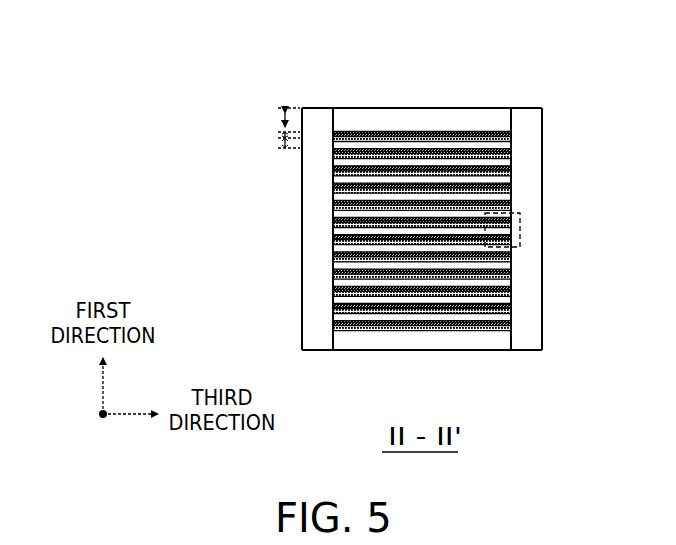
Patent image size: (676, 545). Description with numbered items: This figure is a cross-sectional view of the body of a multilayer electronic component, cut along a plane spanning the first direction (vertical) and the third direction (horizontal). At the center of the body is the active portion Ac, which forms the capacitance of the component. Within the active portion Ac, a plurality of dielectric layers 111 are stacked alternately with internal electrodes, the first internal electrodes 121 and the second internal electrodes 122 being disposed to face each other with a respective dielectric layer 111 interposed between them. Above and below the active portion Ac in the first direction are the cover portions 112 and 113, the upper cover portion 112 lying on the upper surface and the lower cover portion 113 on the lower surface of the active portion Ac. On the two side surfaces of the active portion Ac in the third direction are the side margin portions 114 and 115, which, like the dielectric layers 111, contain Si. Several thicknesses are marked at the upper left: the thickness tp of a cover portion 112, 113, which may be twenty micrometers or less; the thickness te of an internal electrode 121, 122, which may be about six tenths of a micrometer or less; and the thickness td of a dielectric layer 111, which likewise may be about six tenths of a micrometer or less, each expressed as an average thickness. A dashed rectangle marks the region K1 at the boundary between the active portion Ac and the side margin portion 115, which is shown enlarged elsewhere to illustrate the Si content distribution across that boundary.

The cover portion 112 is at (428, 112).
The first internal electrode 121 is at (513, 131).
The dielectric layer 111 is at (506, 146).
The second internal electrode 122 is at (510, 154).
The region K1 is at (522, 226).
The side margin portion 115 is at (533, 252).
The side margin portion 114 is at (318, 262).
The cover portion 113 is at (533, 328).
The active portion Ac is at (325, 228).
The thickness of cover portion tp is at (280, 120).
The thickness of internal electrode te is at (283, 136).
The thickness of dielectric layer td is at (283, 146).